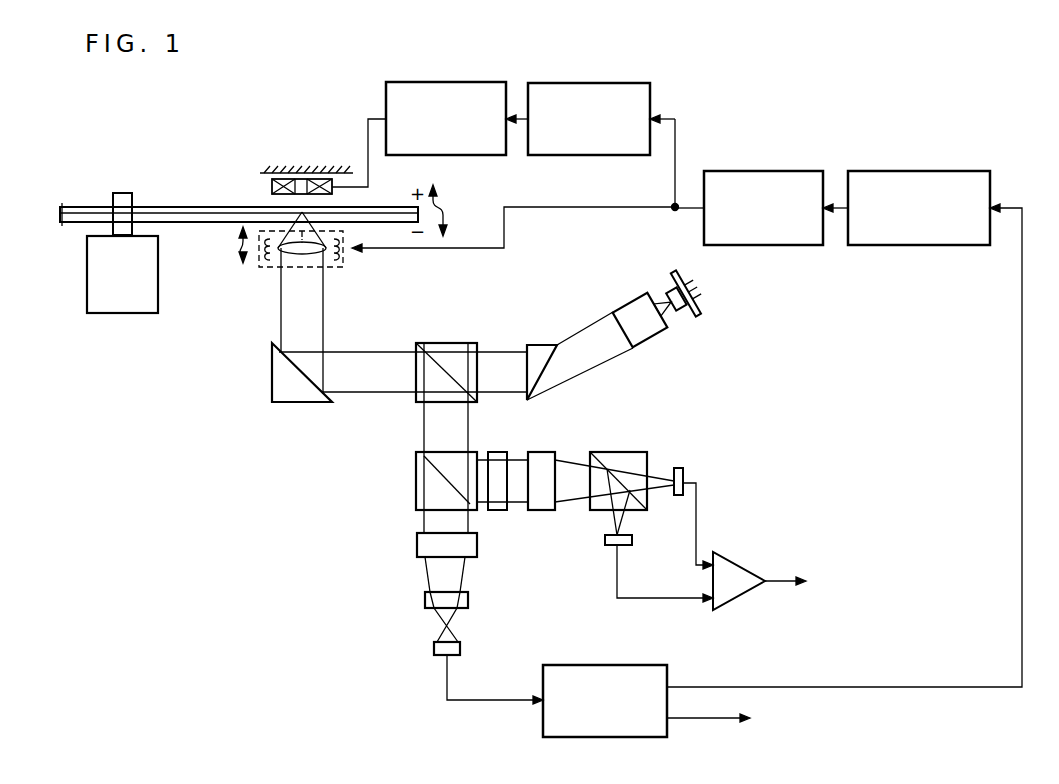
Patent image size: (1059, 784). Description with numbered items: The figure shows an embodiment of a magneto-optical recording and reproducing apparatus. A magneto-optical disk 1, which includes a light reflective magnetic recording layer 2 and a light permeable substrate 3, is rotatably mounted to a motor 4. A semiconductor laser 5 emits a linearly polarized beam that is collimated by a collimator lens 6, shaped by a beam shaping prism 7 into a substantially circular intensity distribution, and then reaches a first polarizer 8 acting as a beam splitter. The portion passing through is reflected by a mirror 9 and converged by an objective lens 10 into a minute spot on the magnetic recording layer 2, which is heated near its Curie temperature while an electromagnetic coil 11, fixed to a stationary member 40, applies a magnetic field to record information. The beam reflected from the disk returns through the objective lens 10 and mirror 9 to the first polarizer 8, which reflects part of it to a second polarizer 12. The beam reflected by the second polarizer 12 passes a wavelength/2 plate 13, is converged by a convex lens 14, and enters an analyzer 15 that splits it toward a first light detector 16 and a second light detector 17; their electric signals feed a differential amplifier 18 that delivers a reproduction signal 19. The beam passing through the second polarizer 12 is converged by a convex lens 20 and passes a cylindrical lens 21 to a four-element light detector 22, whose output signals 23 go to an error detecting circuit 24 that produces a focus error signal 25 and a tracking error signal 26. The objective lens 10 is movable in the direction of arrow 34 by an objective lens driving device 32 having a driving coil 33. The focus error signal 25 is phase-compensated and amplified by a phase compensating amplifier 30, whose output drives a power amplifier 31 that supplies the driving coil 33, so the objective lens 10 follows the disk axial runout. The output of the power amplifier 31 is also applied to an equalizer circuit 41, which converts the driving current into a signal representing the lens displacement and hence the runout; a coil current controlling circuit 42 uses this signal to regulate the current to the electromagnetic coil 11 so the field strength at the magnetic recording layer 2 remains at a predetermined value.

The magneto-optical disk 1 is at (177, 228).
The magnetic recording layer 2 is at (150, 206).
The substrate 3 is at (182, 213).
The motor 4 is at (105, 314).
The semiconductor laser 5 is at (673, 292).
The collimator lens 6 is at (623, 303).
The beam shaping prism 7 is at (540, 345).
The first polarizer 8 is at (453, 343).
The mirror 9 is at (272, 380).
The objective lens 10 is at (326, 251).
The electromagnetic coil 11 is at (272, 187).
The second polarizer 12 is at (416, 470).
The wavelength/2 plate 13 is at (497, 452).
The convex lens 14 is at (545, 452).
The analyzer 15 is at (625, 452).
The first light detector 16 is at (678, 468).
The second light detector 17 is at (608, 548).
The differential amplifier 18 is at (746, 566).
The reproduction signal 19 is at (777, 578).
The convex lens 20 is at (417, 545).
The cylindrical lens 21 is at (425, 601).
The light detector 22 is at (434, 650).
The output signals 23 is at (504, 700).
The error detecting circuit 24 is at (602, 665).
The focus error signal 25 is at (715, 687).
The tracking error signal 26 is at (710, 719).
The phase compensating amplifier 30 is at (935, 171).
The power amplifier 31 is at (780, 171).
The objective lens driving device 32 is at (275, 282).
The driving coil 33 is at (268, 262).
The arrow 34 is at (240, 250).
The stationary member 40 is at (308, 172).
The equalizer circuit 41 is at (603, 83).
The coil current controlling circuit 42 is at (460, 82).